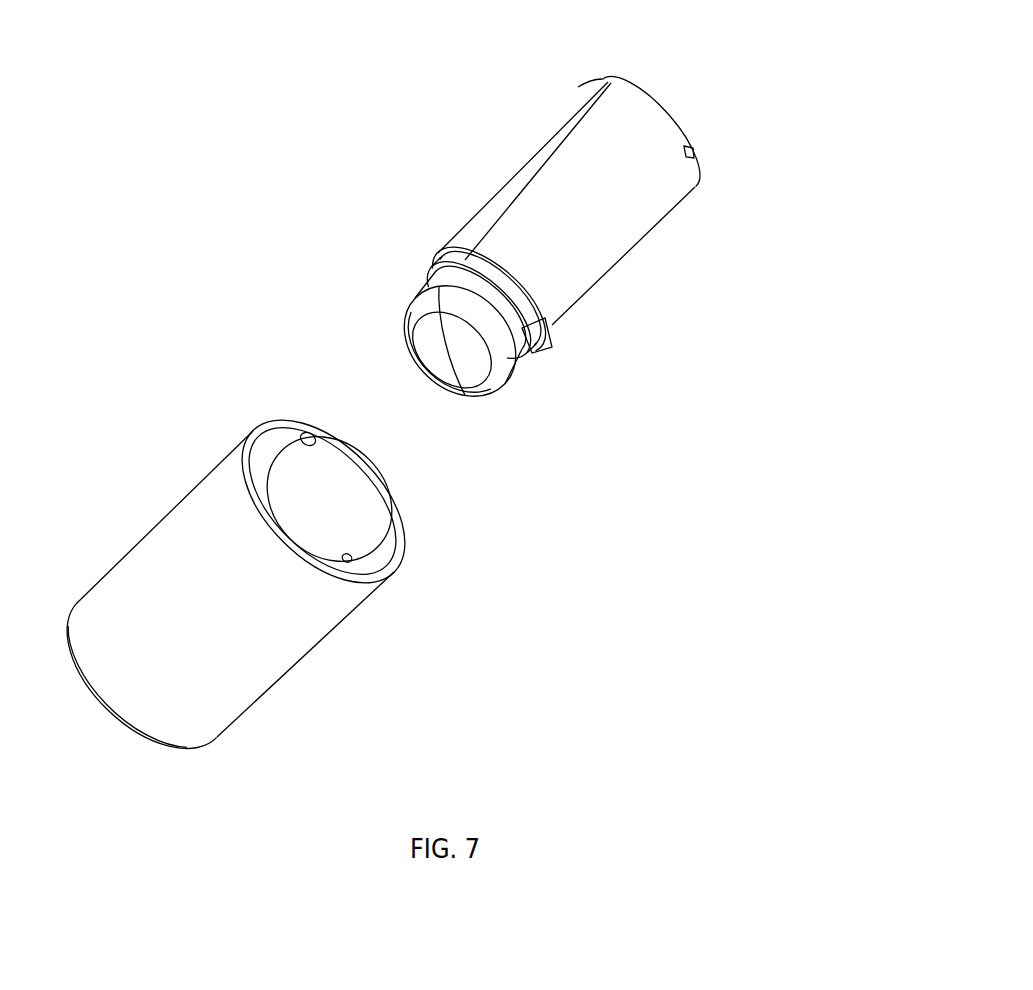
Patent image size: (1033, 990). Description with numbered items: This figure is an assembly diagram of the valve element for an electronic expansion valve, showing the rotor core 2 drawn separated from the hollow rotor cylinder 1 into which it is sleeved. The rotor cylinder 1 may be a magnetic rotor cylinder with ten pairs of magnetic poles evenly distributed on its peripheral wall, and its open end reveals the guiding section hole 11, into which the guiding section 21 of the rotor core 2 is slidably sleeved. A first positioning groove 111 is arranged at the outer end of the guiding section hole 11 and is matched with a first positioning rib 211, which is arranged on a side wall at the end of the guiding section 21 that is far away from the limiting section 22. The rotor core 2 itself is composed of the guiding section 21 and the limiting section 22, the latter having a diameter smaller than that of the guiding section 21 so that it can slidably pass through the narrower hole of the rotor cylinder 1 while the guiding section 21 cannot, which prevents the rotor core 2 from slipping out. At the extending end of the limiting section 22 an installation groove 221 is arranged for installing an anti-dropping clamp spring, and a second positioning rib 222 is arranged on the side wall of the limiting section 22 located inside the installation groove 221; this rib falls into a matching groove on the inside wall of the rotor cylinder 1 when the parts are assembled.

The rotor cylinder 1 is at (232, 620).
The guiding section hole 11 is at (342, 505).
The first positioning groove 111 is at (302, 436).
The rotor core 2 is at (411, 266).
The guiding section 21 is at (606, 132).
The first positioning rib 211 is at (698, 149).
The limiting section 22 is at (488, 278).
The installation groove 221 is at (413, 304).
The second positioning rib 222 is at (542, 332).